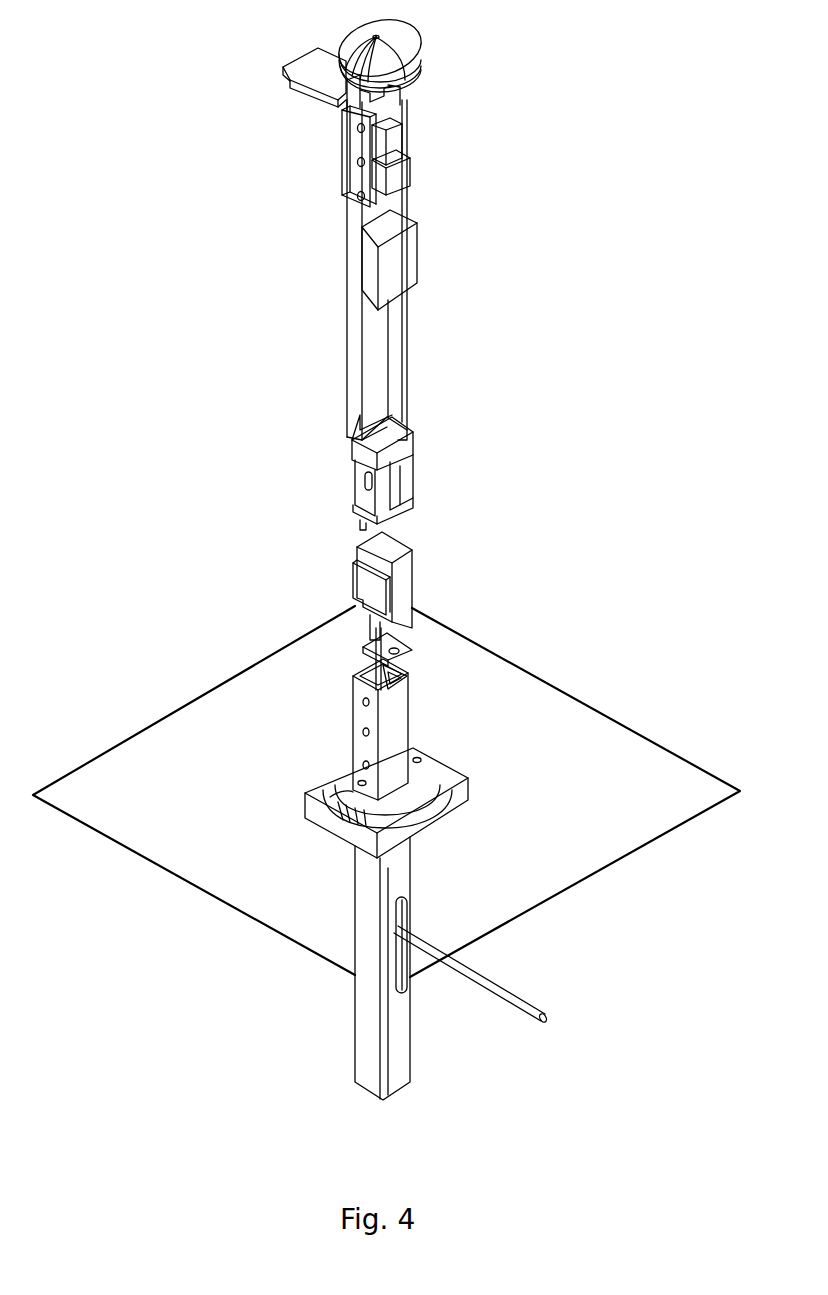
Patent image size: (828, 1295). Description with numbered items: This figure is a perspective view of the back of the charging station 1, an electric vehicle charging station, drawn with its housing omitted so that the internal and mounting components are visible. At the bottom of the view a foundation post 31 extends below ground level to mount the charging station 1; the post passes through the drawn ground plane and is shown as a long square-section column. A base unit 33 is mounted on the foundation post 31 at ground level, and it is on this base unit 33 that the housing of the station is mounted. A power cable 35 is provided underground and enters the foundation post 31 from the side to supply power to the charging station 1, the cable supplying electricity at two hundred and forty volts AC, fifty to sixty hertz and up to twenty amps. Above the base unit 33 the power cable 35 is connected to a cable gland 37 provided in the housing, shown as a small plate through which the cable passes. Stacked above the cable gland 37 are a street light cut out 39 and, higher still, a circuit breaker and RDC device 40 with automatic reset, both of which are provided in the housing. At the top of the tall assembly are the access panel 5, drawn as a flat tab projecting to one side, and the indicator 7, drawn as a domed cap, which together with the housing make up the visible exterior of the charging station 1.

The charging station 1 is at (490, 343).
The access panel 5 is at (325, 62).
The indicator 7 is at (418, 62).
The foundation post 31 is at (368, 1030).
The base unit 33 is at (310, 808).
The power cable 35 is at (523, 1008).
The cable gland 37 is at (405, 650).
The street light cut out 39 is at (392, 598).
The circuit breaker and RDC device 40 is at (400, 482).